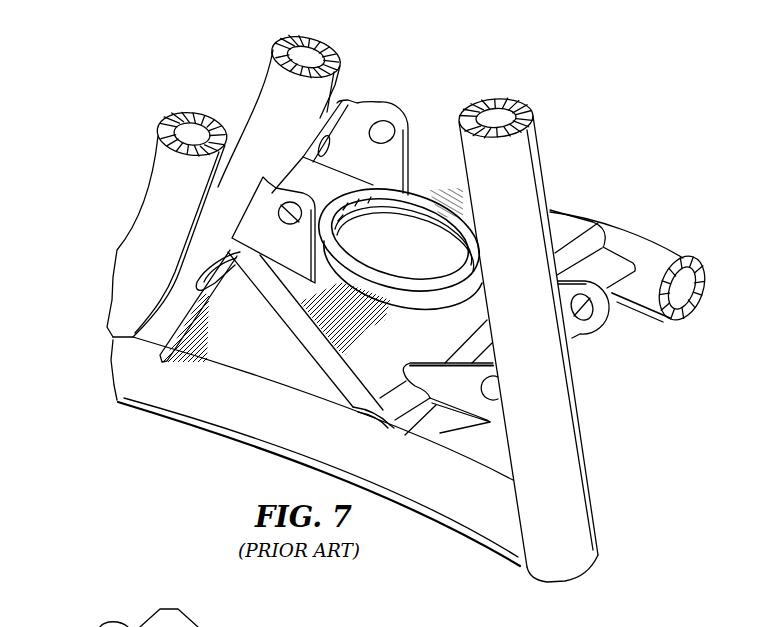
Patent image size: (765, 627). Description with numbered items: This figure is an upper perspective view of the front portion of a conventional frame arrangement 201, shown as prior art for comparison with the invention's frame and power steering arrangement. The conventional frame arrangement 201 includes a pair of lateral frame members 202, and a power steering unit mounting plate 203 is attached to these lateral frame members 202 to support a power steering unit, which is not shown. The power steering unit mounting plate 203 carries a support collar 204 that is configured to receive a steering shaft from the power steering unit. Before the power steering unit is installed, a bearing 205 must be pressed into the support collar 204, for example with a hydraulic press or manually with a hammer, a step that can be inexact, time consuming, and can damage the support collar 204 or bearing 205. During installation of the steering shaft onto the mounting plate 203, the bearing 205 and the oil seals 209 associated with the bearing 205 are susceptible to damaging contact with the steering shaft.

The conventional frame arrangement 201 is at (163, 68).
The lateral frame member 202 is at (653, 248).
The power steering unit mounting plate 203 is at (437, 103).
The support collar 204 is at (420, 208).
The bearing 205 is at (420, 263).
The oil seal 209 is at (382, 220).